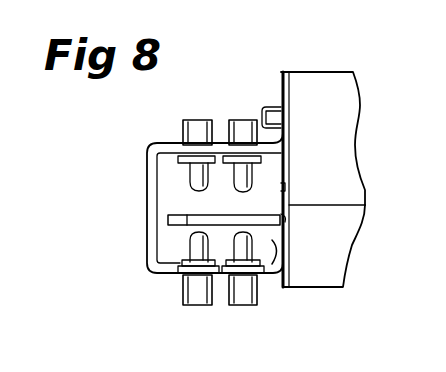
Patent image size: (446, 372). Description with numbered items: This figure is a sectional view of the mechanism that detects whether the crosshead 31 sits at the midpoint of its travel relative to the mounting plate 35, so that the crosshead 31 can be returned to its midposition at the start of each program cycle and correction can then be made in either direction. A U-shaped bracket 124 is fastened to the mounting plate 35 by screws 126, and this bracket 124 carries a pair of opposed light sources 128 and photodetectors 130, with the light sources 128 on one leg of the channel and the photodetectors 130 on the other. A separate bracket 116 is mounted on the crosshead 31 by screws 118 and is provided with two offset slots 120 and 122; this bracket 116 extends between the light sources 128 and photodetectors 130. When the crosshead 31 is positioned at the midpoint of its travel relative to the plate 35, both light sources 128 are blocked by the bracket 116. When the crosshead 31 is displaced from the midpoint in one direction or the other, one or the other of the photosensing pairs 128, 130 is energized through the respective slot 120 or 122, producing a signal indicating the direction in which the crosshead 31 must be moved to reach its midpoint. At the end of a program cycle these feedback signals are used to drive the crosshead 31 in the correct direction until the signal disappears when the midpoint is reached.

The U-shaped bracket 124 is at (147, 146).
The screws 126 is at (265, 107).
The mounting plate 35 is at (358, 106).
The crosshead 31 is at (345, 262).
The photodetectors 130 is at (238, 176).
The light sources 128 is at (212, 234).
The offset slot 120 is at (188, 214).
The offset slot 122 is at (245, 216).
The bracket 116 is at (284, 218).
The screws 118 is at (270, 268).